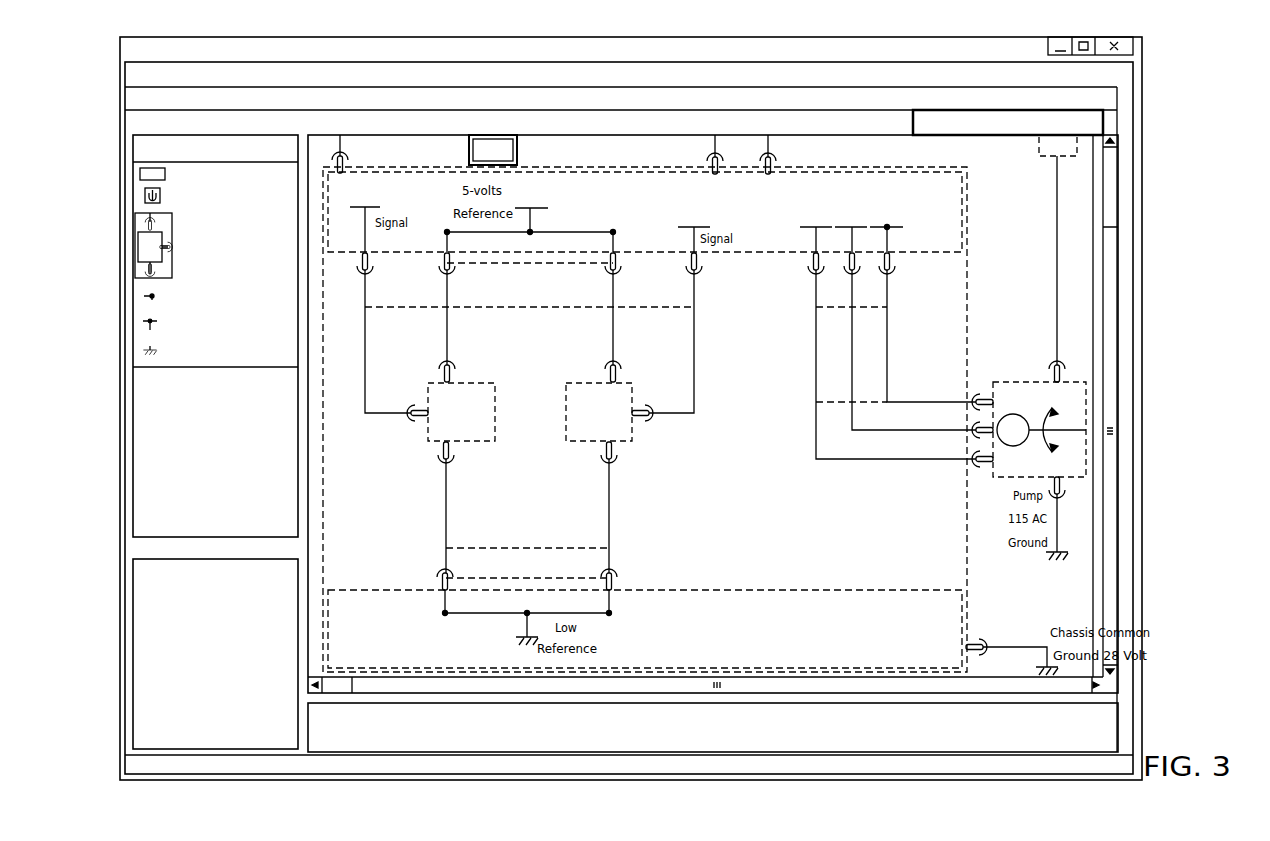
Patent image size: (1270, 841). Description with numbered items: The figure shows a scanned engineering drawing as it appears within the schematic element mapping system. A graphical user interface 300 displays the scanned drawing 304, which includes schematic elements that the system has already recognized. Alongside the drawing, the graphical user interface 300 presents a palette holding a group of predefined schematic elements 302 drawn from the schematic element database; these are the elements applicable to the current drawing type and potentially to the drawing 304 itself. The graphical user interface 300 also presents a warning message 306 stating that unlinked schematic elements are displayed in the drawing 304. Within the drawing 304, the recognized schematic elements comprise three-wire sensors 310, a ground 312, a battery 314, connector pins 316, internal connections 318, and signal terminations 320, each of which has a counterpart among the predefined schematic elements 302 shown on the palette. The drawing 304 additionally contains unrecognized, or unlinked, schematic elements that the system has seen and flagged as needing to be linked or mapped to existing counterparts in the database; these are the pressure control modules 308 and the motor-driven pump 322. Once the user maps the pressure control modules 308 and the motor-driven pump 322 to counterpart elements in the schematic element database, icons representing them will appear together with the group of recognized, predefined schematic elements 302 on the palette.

The graphical user interface 300 is at (1157, 111).
The predefined schematic elements 302 is at (232, 538).
The scanned drawing 304 is at (443, 133).
The warning message 306 is at (994, 110).
The pressure control modules 308 is at (968, 246).
The three-wire sensors 310 is at (496, 398).
The ground 312 is at (518, 640).
The battery 314 is at (518, 155).
The connector pins 316 is at (352, 160).
The internal connections 318 is at (445, 231).
The signal terminations 320 is at (548, 208).
The motor-driven pump 322 is at (1086, 422).